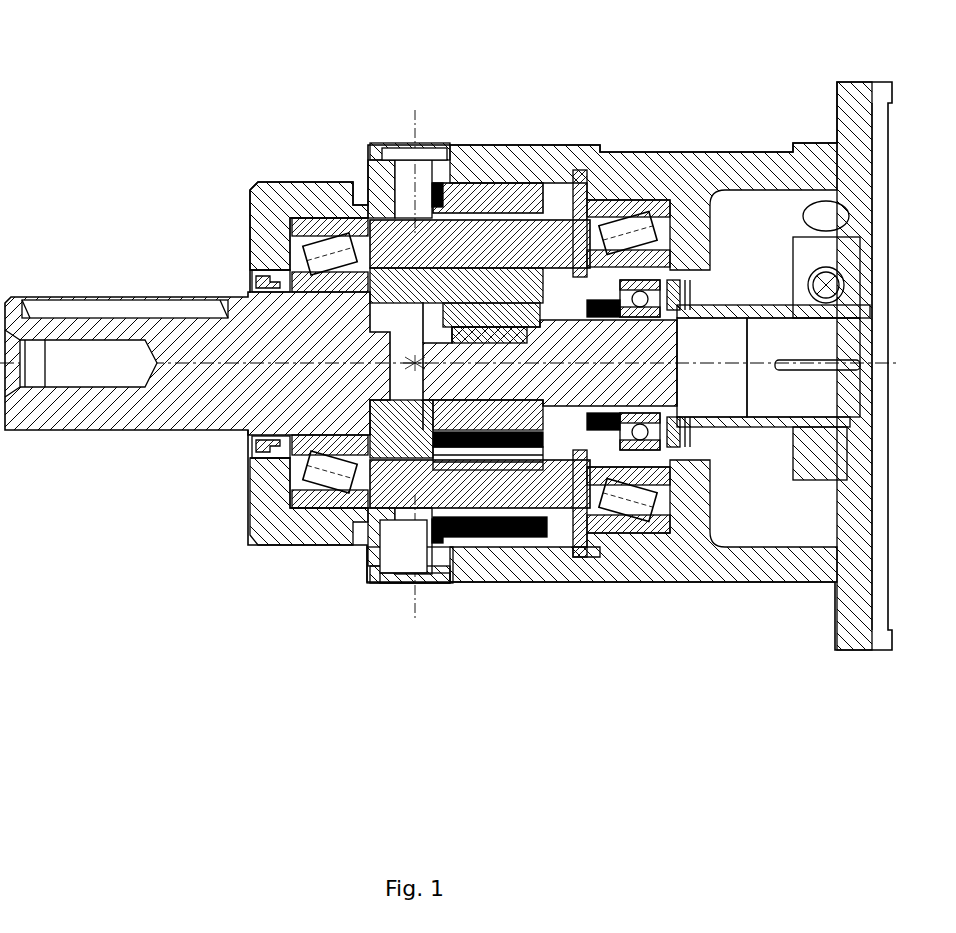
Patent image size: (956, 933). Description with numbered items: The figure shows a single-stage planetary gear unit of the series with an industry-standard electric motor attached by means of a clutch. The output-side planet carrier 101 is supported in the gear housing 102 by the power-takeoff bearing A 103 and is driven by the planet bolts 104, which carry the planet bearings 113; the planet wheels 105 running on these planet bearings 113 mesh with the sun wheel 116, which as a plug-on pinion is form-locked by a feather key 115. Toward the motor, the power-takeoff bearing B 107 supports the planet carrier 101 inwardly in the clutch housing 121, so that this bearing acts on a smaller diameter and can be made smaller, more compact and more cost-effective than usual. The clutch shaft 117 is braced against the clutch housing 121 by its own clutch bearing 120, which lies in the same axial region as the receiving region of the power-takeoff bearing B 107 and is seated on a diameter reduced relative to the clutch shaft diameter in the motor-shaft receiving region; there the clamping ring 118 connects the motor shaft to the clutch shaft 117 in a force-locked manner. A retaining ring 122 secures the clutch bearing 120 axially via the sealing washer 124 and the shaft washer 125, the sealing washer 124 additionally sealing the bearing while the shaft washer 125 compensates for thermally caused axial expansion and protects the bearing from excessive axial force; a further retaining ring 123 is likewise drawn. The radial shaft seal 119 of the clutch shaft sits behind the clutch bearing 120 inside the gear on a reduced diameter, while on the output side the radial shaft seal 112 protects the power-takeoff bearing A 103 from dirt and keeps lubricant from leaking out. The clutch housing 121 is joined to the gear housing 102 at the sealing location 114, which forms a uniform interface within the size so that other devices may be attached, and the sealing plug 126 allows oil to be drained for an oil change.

The planet carrier 101 is at (150, 405).
The gear housing 102 is at (485, 200).
The power-takeoff bearing A 103 is at (290, 262).
The planet bolt 104 is at (508, 250).
The planet wheel 105 is at (353, 183).
The power-takeoff bearing B 107 is at (610, 205).
The radial shaft seal for the power takeoff 112 is at (253, 278).
The planet bearing 113 is at (470, 222).
The sealing location 114 is at (608, 557).
The feather key 115 is at (248, 193).
The sun wheel (plug-on pinion) 116 is at (408, 165).
The clutch shaft 117 is at (733, 437).
The clamping ring 118 is at (808, 467).
The radial shaft seal 119 is at (680, 278).
The clutch bearing 120 is at (507, 578).
The clutch housing 121 is at (636, 180).
The retaining ring 122 is at (680, 453).
The retaining ring 123 is at (437, 578).
The sealing washer 124 is at (632, 460).
The shaft washer 125 is at (715, 240).
The sealing plug 126 is at (383, 583).